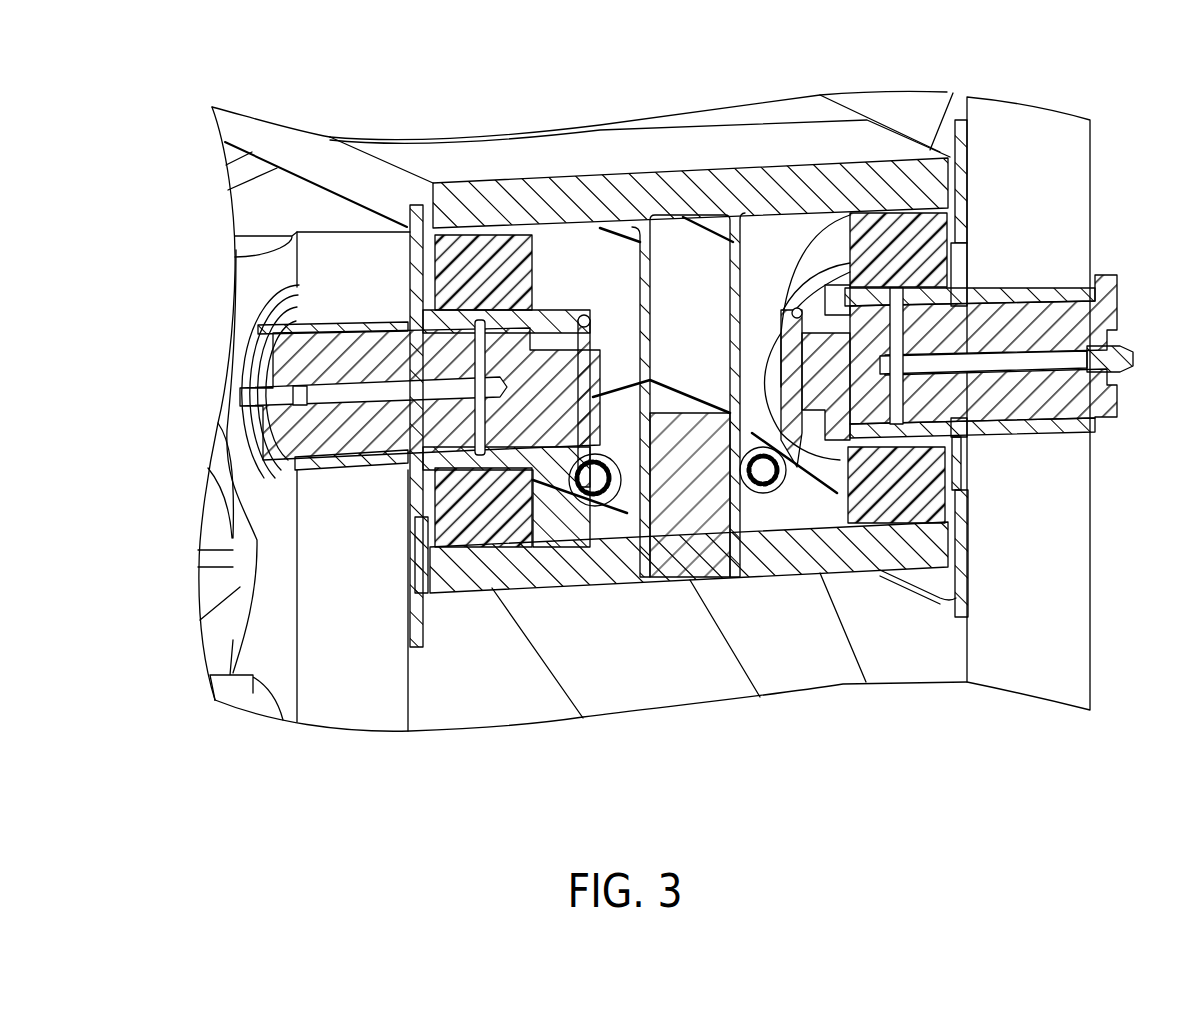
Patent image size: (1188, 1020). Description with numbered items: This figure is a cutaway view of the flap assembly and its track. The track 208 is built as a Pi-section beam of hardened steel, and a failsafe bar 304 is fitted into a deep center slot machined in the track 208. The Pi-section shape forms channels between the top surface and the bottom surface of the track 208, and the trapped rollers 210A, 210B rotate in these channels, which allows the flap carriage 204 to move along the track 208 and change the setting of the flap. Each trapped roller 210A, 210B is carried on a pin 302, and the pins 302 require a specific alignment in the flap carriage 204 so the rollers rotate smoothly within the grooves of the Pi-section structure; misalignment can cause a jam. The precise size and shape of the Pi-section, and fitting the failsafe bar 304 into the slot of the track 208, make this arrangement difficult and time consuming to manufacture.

The flap carriage 204 is at (1020, 145).
The track 208 is at (480, 158).
The trapped roller 210A is at (492, 533).
The trapped roller 210B is at (910, 516).
The pin 302 is at (275, 359).
The failsafe bar 304 is at (688, 540).